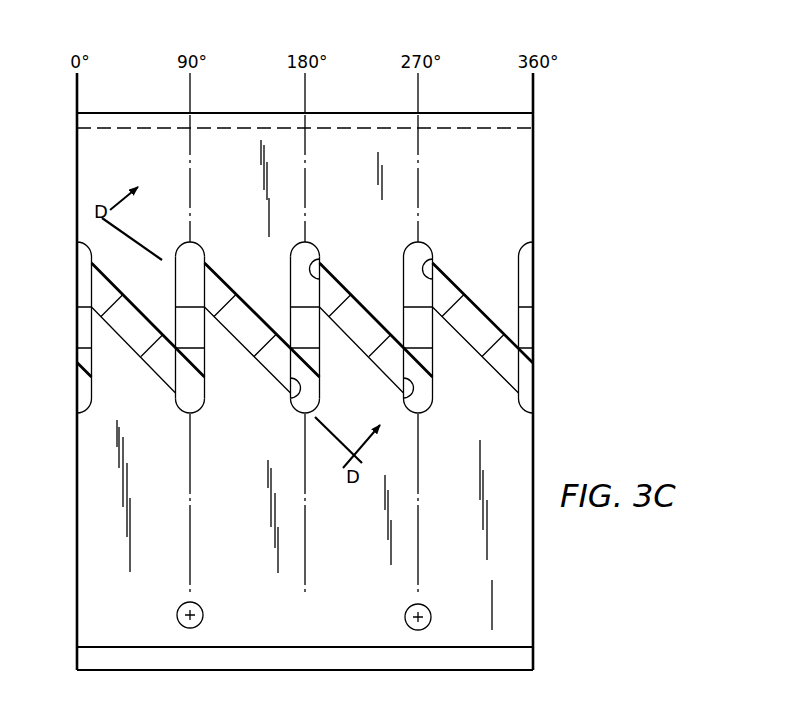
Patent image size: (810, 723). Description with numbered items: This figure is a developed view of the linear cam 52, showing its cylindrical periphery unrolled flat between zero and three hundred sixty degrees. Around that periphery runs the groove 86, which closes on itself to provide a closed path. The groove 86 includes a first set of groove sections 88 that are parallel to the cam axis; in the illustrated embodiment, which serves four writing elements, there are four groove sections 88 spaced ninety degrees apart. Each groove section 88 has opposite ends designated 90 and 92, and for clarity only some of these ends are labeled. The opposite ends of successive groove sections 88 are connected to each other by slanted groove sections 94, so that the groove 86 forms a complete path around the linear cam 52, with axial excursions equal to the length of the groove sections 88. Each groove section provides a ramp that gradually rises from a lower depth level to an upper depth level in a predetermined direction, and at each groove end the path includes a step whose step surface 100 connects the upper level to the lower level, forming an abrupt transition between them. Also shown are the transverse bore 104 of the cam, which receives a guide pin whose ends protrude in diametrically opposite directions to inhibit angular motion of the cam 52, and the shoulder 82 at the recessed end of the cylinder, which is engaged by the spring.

The linear cam 52 is at (92, 165).
The shoulder 82 is at (508, 648).
The groove 86 is at (121, 333).
The groove sections 88 is at (78, 300).
The groove section end 90 is at (194, 251).
The groove section end 92 is at (198, 403).
The slanted groove sections 94 is at (167, 363).
The step surface 100 is at (316, 256).
The transverse bore 104 is at (202, 612).